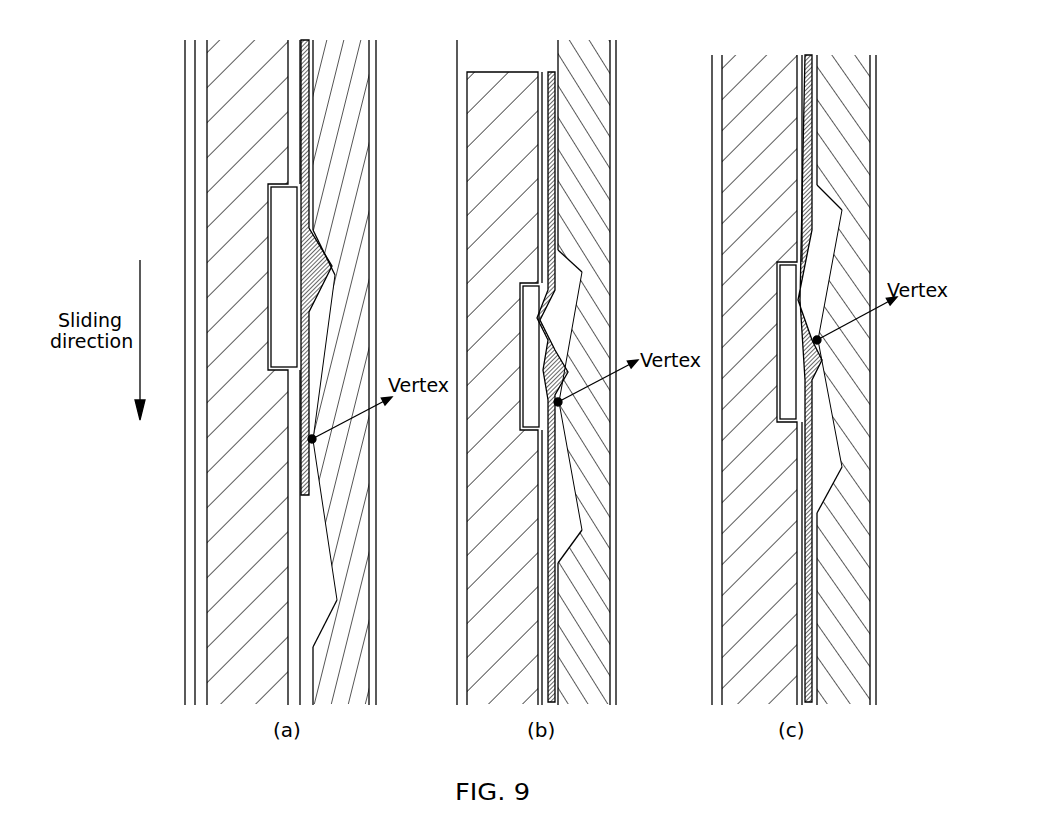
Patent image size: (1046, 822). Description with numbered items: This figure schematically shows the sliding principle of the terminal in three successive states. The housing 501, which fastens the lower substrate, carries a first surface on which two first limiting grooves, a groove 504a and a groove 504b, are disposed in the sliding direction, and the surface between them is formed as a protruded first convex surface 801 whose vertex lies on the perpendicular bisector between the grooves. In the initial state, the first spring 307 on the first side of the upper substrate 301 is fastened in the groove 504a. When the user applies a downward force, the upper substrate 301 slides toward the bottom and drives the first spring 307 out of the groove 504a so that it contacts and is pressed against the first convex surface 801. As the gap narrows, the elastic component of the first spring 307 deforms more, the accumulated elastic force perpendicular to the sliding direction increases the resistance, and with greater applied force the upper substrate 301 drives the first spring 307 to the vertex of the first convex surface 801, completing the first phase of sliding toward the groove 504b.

The upper substrate 301 is at (228, 52).
The housing 501 is at (338, 50).
The first spring 307 is at (313, 298).
The groove 504a is at (330, 270).
The groove 504b is at (338, 600).
The first convex surface 801 is at (315, 487).